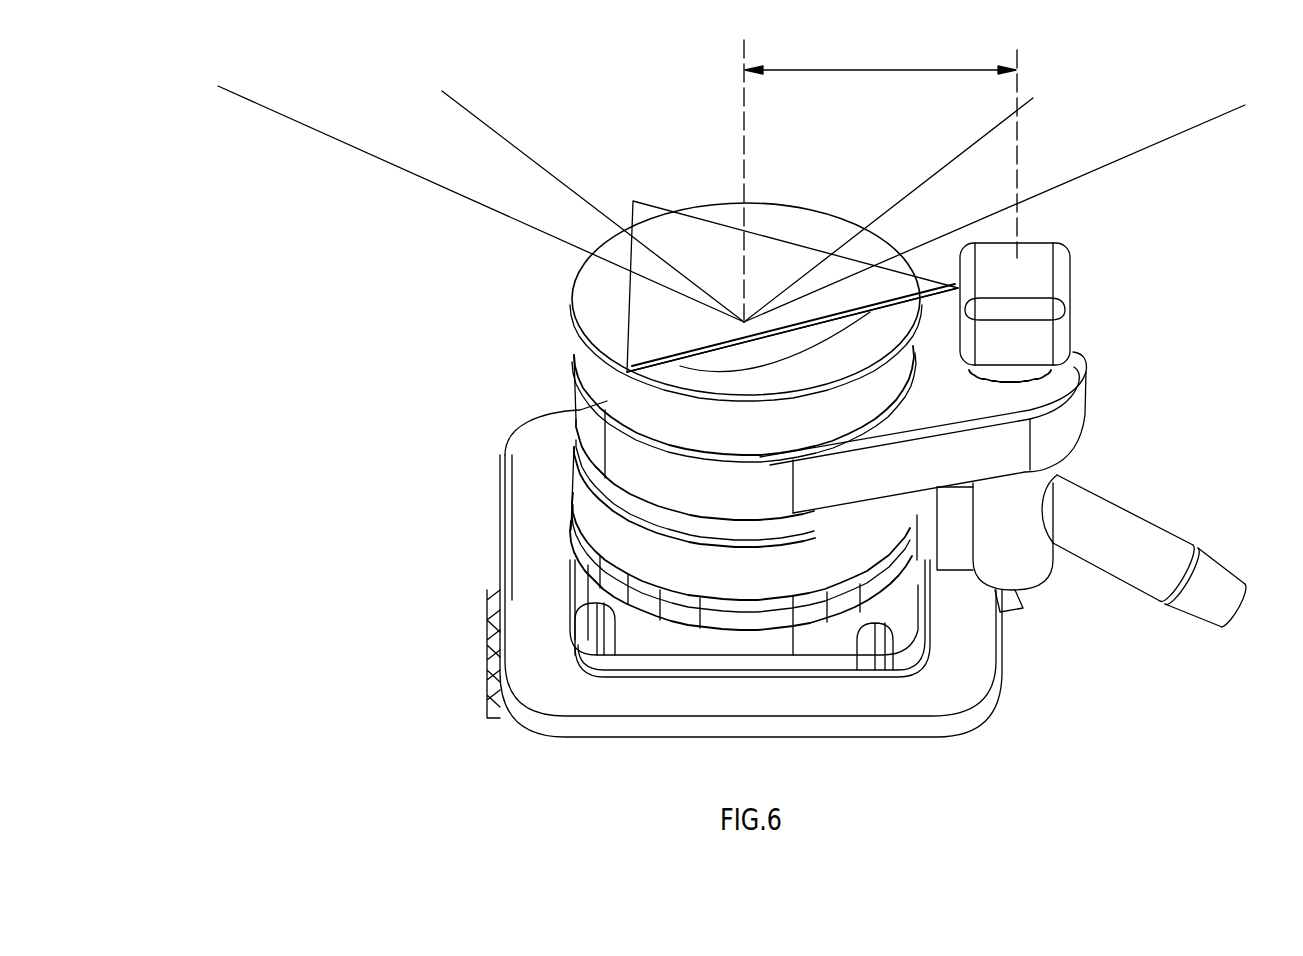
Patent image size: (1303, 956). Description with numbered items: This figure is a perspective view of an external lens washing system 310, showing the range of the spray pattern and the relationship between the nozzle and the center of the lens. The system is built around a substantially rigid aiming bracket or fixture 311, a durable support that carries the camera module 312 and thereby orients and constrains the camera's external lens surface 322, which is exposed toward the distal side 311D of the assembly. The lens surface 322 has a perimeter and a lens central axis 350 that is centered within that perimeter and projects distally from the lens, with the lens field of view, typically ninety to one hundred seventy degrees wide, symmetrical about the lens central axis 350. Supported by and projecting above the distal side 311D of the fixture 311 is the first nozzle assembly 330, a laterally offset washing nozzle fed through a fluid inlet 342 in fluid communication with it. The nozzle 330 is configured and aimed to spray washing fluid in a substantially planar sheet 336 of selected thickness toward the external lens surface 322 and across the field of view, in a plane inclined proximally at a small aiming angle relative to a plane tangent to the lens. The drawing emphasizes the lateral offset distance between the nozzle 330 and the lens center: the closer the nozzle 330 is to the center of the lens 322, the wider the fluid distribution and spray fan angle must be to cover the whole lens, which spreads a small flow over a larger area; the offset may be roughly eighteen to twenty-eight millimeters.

The external lens washing system 310 is at (584, 125).
The lens central axis 350 is at (742, 87).
The substantially planar sheet 336 is at (773, 248).
The first nozzle assembly 330 is at (1035, 248).
The external lens surface 322 is at (598, 302).
The aiming bracket or fixture 311 is at (612, 440).
The distal side 311D is at (959, 403).
The camera module 312 is at (610, 527).
The fluid inlet 342 is at (1143, 533).